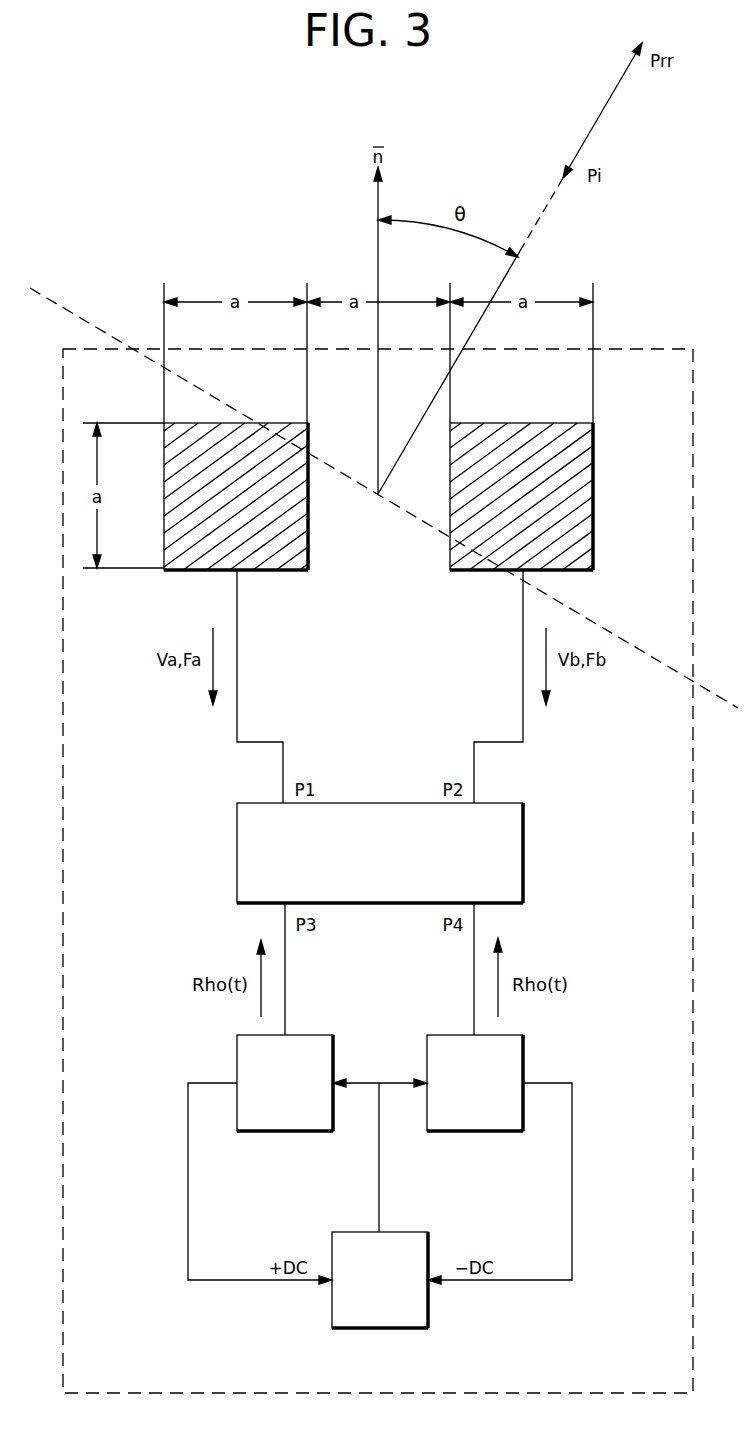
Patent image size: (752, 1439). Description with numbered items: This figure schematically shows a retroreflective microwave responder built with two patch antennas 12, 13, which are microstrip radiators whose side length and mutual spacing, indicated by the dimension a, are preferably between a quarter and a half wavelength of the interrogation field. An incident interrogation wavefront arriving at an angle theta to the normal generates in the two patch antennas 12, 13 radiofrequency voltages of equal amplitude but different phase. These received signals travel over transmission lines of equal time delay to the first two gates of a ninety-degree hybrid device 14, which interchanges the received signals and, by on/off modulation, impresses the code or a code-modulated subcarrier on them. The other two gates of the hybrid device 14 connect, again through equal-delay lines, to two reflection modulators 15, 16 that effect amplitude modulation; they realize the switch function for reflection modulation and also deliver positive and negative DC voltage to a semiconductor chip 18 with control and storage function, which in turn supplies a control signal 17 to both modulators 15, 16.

The patch antenna 12 is at (275, 573).
The patch antenna 13 is at (577, 493).
The 90° hybrid device 14 is at (513, 857).
The reflection modulator 15 is at (270, 1121).
The reflection modulator 16 is at (487, 1121).
The control signal 17 is at (379, 1203).
The semiconductor chip 18 is at (428, 1308).